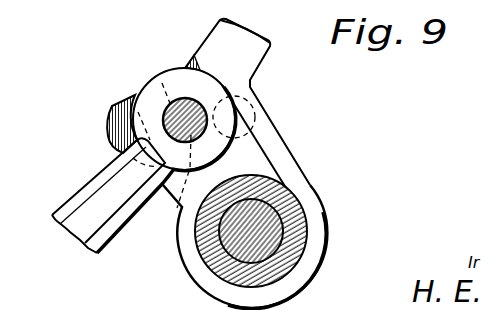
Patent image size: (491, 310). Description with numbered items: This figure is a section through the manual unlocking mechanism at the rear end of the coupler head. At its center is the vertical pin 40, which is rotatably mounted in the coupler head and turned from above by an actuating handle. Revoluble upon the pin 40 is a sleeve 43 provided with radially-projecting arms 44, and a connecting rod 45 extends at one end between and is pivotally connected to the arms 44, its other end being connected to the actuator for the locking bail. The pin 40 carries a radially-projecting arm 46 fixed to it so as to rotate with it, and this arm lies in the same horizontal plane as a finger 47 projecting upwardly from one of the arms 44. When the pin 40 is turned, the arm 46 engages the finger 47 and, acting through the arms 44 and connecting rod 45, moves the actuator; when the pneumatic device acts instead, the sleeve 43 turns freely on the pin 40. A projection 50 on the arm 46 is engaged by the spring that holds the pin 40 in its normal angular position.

The vertical pin 40 is at (252, 232).
The sleeve 43 is at (282, 206).
The radially-projecting arms 44 is at (250, 163).
The connecting rod 45 is at (102, 193).
The radially-projecting arm 46 is at (263, 136).
The finger 47 is at (110, 108).
The projection 50 is at (248, 104).